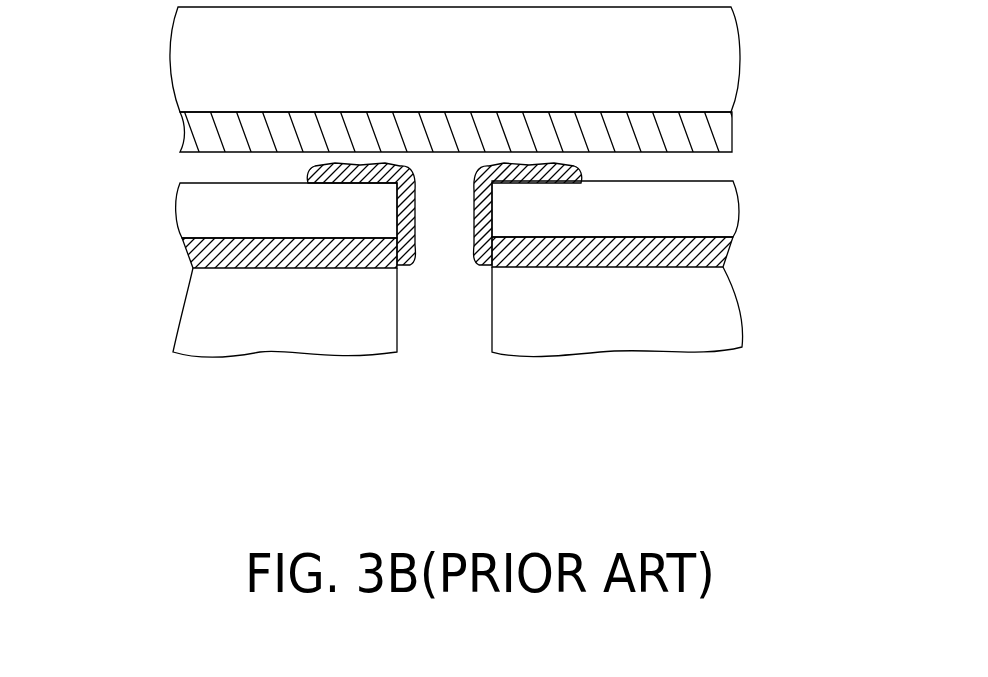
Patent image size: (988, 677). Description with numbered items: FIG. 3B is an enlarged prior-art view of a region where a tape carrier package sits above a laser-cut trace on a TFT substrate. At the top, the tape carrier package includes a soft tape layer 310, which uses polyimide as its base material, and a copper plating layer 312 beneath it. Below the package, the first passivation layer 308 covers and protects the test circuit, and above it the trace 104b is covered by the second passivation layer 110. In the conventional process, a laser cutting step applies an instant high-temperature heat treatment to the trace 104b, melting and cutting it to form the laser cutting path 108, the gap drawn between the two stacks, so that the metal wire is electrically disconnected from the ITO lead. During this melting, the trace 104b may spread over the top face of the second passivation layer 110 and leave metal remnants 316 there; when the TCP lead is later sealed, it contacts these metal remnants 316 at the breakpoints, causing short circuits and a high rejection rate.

The soft tape layer 310 is at (715, 68).
The copper plating layer 312 is at (722, 132).
The metal remnants 316 is at (307, 177).
The second passivation layer 110 is at (235, 222).
The trace 104b is at (202, 262).
The first passivation layer 308 is at (203, 345).
The laser cutting path 108 is at (441, 314).